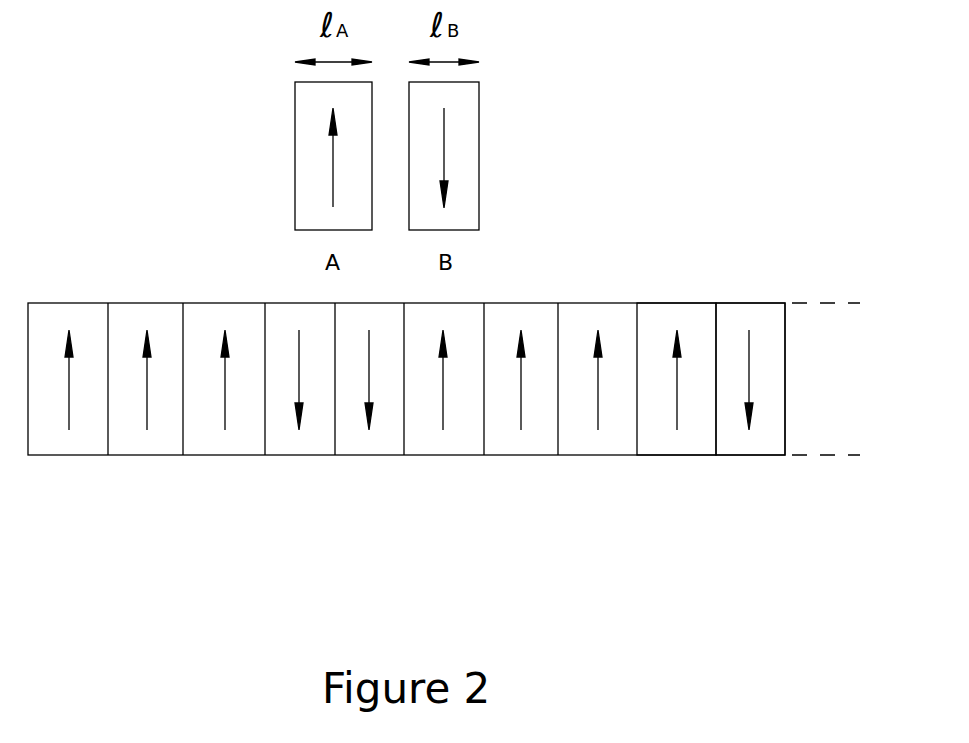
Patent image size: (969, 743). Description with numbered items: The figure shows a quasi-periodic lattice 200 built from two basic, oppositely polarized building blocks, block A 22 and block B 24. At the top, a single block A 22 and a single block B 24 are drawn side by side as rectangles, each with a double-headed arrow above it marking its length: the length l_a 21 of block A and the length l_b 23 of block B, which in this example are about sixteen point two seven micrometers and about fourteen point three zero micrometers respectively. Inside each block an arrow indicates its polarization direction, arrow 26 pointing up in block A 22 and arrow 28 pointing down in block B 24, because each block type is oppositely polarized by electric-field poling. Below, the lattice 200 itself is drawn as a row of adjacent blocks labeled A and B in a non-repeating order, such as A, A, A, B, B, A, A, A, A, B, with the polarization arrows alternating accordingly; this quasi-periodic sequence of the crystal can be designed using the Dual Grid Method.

The length l_a 21 is at (326, 62).
The length l_b 23 is at (450, 62).
The building block A 22 is at (295, 214).
The building block B 24 is at (479, 202).
The polarization arrow of block A 26 is at (333, 166).
The polarization arrow of block B 28 is at (444, 152).
The quasi-periodic lattice 200 is at (436, 588).